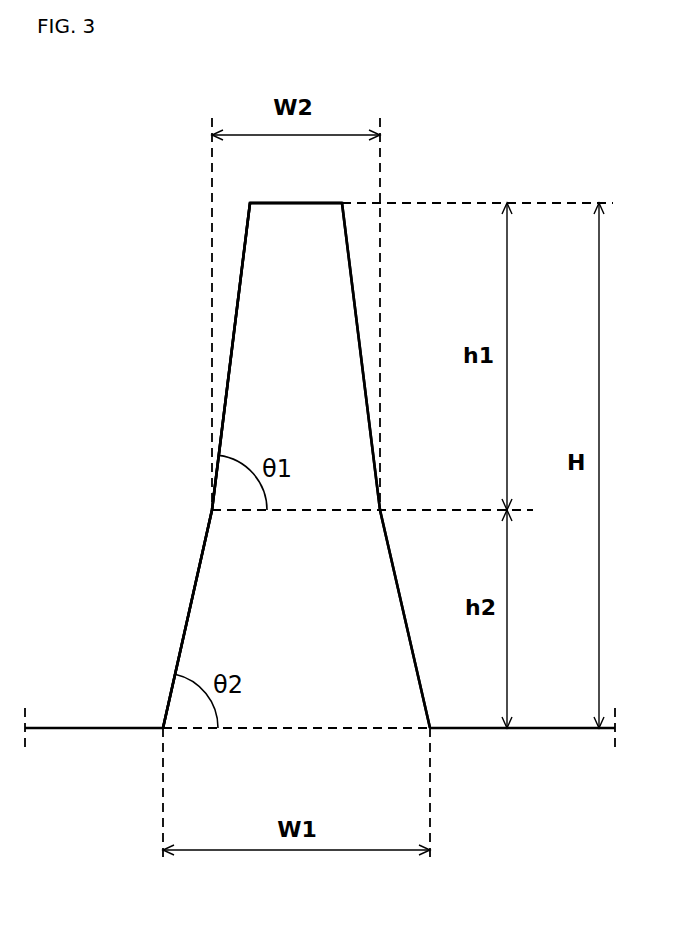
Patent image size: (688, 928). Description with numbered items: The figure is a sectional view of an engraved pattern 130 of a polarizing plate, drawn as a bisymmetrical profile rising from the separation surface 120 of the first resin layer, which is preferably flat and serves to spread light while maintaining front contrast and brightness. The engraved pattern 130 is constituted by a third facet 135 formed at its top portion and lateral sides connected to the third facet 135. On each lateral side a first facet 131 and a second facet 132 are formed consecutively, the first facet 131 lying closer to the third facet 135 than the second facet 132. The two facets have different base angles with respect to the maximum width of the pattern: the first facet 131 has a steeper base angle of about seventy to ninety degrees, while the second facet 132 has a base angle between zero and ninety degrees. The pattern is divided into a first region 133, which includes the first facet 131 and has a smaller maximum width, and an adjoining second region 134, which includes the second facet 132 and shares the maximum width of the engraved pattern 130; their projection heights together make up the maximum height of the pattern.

The separation surface 120 is at (78, 730).
The engraved pattern 130 is at (168, 214).
The first facet 131 is at (226, 393).
The second facet 132 is at (177, 664).
The first region 133 is at (260, 307).
The second region 134 is at (212, 584).
The third facet 135 is at (330, 203).